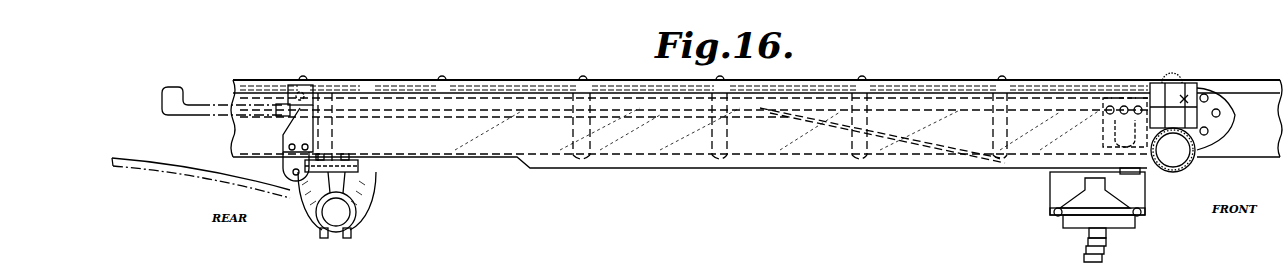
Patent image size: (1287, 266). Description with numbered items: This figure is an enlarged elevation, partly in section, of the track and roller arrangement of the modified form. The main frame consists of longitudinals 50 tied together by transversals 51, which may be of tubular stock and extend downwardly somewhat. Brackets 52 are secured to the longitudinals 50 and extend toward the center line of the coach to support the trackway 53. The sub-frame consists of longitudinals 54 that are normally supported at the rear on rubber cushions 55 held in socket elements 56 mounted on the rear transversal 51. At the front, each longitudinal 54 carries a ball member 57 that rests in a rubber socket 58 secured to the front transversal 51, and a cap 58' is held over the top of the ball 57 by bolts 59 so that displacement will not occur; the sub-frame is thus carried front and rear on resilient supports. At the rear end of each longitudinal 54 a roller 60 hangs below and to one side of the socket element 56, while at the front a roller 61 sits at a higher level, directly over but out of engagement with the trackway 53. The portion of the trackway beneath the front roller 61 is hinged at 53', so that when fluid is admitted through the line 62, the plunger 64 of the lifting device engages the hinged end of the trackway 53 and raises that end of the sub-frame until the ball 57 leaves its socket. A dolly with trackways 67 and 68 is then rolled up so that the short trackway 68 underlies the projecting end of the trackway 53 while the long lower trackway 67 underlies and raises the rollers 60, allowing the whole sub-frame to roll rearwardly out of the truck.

The longitudinal 50 is at (1042, 82).
The transversal 51 is at (356, 216).
The bracket 52 is at (990, 88).
The trackway 53 is at (729, 125).
The hinge 53' is at (1010, 196).
The longitudinal 54 is at (490, 136).
The rubber cushion 55 is at (333, 158).
The socket element 56 is at (353, 180).
The ball member 57 is at (1210, 82).
The rubber socket 58 is at (1235, 139).
The cap 58' is at (1198, 67).
The bolt 59 is at (1172, 88).
The roller 60 is at (284, 179).
The roller 61 is at (1105, 138).
The line 62 is at (1104, 259).
The plunger 64 is at (1142, 205).
The trackway 67 is at (192, 181).
The trackway 68 is at (207, 110).